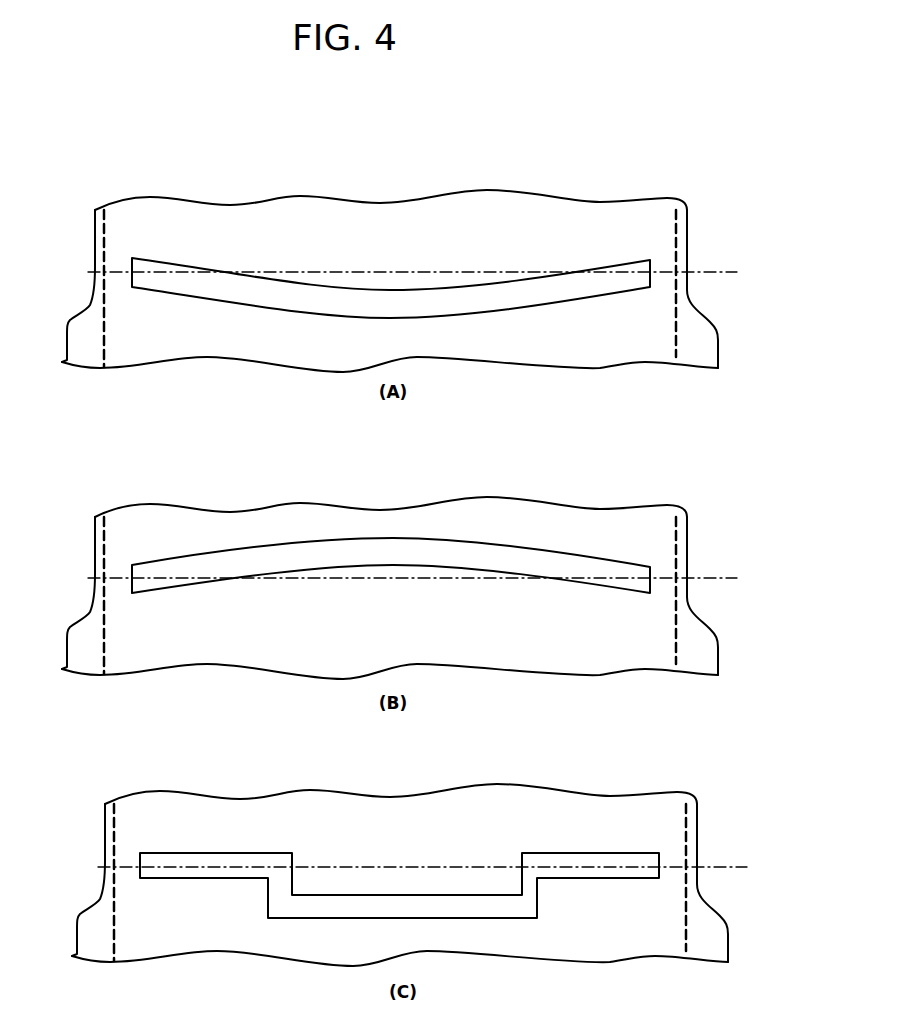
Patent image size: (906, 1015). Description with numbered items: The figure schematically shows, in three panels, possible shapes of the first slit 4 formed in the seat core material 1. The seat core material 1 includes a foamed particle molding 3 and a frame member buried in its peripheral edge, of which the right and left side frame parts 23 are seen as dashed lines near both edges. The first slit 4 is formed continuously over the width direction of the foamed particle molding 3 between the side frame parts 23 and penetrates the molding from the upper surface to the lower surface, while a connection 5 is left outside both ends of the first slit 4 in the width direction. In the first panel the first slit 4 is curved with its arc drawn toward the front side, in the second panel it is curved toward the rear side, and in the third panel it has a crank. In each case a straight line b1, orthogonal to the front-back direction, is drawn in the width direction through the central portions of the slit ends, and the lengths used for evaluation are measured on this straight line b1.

The seat core material 1 is at (602, 183).
The foamed particle molding 3 is at (643, 347).
The first slit 4 is at (388, 300).
The connection 5 is at (113, 267).
The side frame part 23 is at (100, 313).
The straight line b1 is at (722, 273).